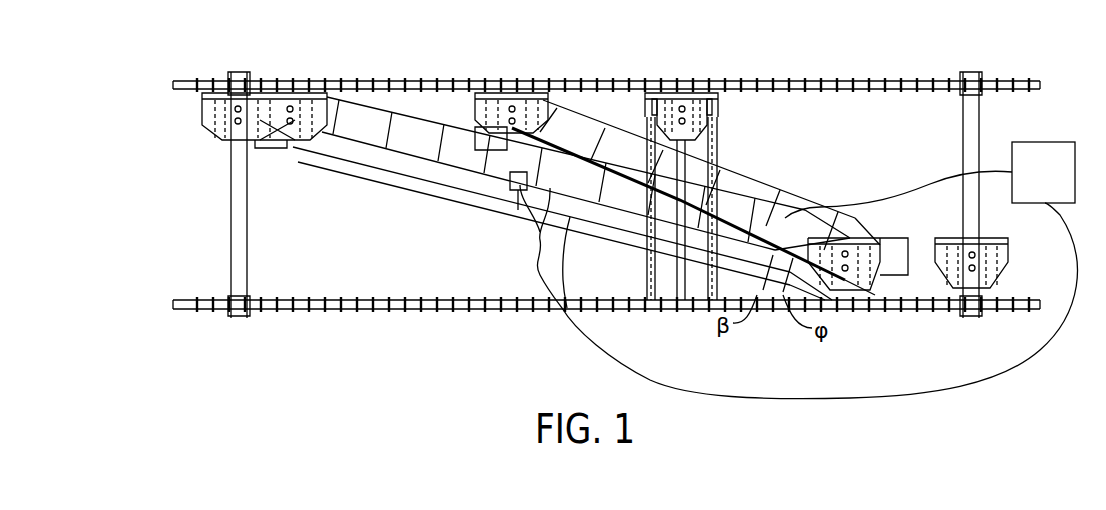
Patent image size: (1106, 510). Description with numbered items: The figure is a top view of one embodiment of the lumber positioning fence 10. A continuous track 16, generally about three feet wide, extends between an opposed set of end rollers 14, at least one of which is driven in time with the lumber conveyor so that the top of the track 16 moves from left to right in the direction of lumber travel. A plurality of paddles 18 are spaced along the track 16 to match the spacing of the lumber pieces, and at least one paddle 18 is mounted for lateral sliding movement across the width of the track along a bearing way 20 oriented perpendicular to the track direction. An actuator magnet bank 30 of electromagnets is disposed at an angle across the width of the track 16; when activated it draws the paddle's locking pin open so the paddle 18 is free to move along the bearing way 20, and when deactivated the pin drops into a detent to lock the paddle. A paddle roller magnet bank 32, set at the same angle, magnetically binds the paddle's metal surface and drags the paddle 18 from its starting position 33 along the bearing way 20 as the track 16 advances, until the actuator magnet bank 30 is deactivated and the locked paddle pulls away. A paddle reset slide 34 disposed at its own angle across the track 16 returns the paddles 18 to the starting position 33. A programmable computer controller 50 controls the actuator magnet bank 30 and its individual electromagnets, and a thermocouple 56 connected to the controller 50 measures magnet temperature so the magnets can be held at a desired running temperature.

The positioning fence 10 is at (441, 345).
The end rollers 14 is at (242, 317).
The continuous track 16 is at (998, 85).
The paddles 18 is at (716, 122).
The bearing way 20 is at (686, 284).
The actuator magnet bank 30 is at (418, 137).
The paddle roller magnet bank 32 is at (356, 170).
The starting position 33 is at (226, 100).
The paddle reset slide 34 is at (733, 190).
The programmable computer controller 50 is at (1050, 183).
The thermocouple 56 is at (514, 190).